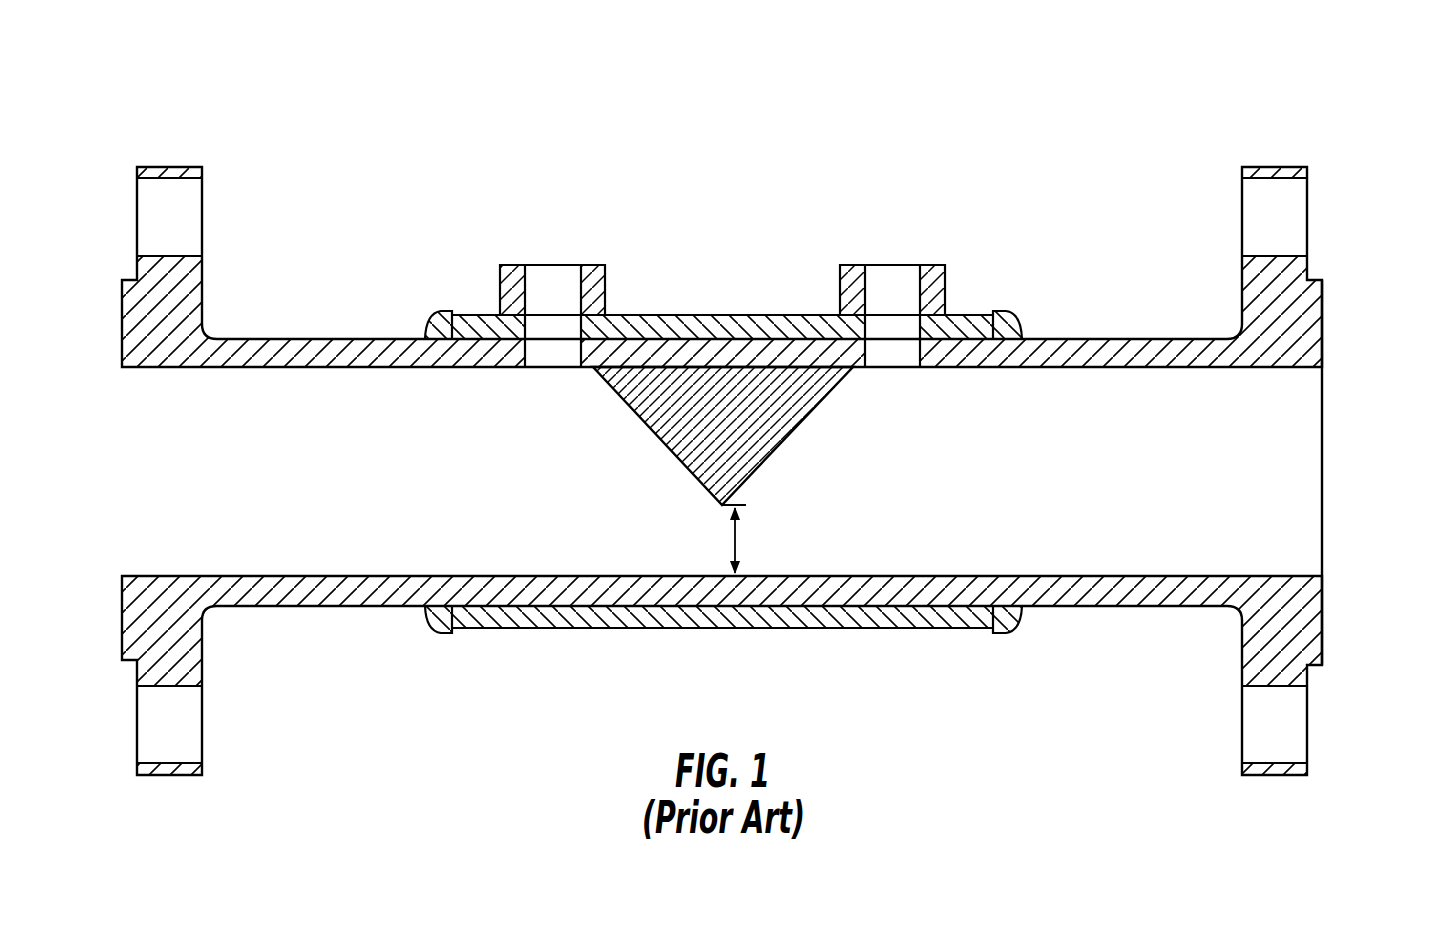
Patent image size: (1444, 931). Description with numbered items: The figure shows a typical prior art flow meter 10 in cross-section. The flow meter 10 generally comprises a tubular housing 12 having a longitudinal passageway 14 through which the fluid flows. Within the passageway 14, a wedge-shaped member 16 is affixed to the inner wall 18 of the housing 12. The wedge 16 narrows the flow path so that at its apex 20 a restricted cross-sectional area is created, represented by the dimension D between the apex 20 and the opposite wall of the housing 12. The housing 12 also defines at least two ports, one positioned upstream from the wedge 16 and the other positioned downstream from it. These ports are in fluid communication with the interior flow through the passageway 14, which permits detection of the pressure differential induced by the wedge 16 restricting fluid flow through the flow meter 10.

The flow meter 10 is at (777, 393).
The tubular housing 12 is at (1086, 607).
The longitudinal passageway 14 is at (1336, 409).
The wedge-shaped member 16 is at (812, 418).
The inner wall 18 is at (722, 294).
The apex 20 is at (717, 510).
The dimension D is at (741, 540).